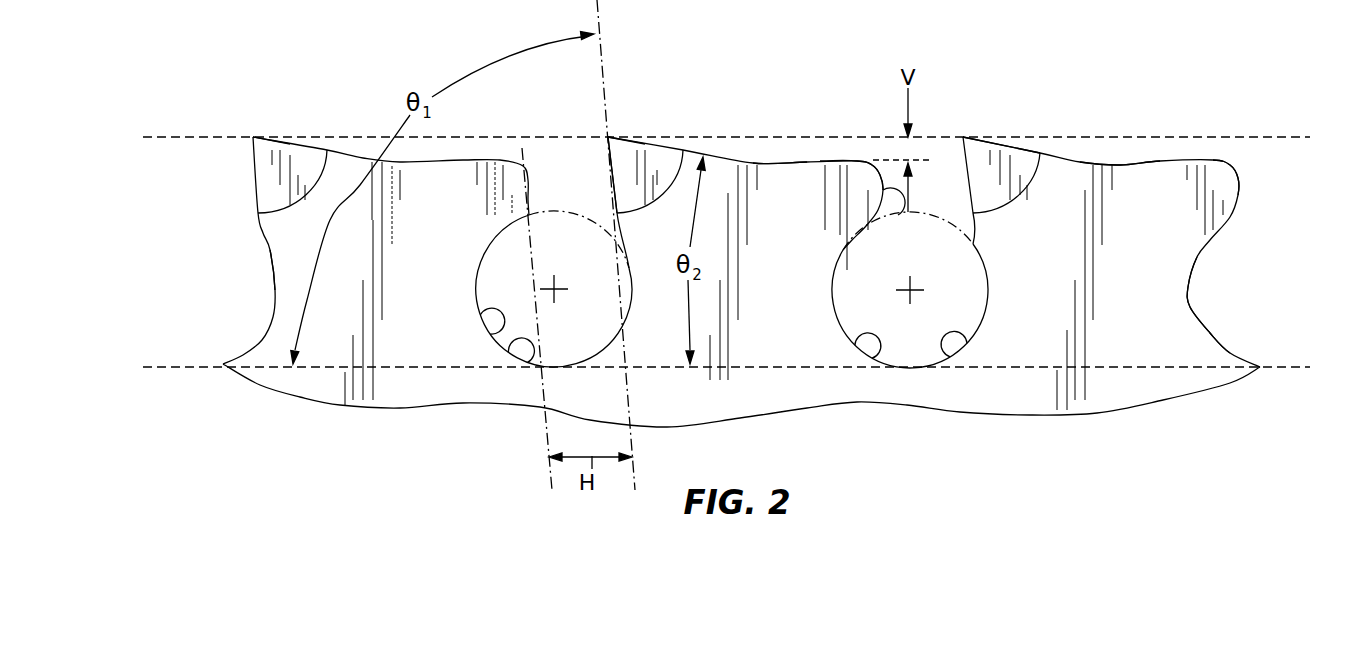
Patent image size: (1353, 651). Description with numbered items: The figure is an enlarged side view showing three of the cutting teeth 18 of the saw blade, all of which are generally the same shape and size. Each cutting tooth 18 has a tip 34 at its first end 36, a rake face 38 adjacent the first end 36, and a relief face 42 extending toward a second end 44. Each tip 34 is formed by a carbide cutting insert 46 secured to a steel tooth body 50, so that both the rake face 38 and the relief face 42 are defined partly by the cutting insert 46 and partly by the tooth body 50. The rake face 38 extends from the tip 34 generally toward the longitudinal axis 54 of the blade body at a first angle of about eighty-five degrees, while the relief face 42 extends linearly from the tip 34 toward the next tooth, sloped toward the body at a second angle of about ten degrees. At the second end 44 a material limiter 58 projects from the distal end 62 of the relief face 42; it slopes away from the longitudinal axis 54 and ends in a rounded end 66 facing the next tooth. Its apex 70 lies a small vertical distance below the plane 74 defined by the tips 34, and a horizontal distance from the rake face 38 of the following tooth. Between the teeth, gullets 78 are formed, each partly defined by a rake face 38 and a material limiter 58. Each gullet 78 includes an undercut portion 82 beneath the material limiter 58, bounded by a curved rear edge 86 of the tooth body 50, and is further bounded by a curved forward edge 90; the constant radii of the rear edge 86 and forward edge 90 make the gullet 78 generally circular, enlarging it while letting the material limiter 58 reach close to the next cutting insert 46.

The cutting tooth 18 is at (490, 108).
The tip 34 is at (253, 137).
The first end 36 is at (999, 100).
The rake face 38 is at (255, 180).
The relief face 42 is at (360, 157).
The second end 44 is at (1258, 180).
The cutting insert 46 is at (628, 175).
The tooth body 50 is at (787, 330).
The longitudinal axis 54 is at (1115, 375).
The material limiter 58 is at (837, 197).
The distal end 62 is at (762, 163).
The rounded end 66 is at (900, 210).
The apex 70 is at (857, 160).
The plane 74 is at (1242, 135).
The gullet 78 is at (512, 345).
The undercut portion 82 is at (477, 310).
The rear edge 86 is at (477, 272).
The forward edge 90 is at (275, 290).